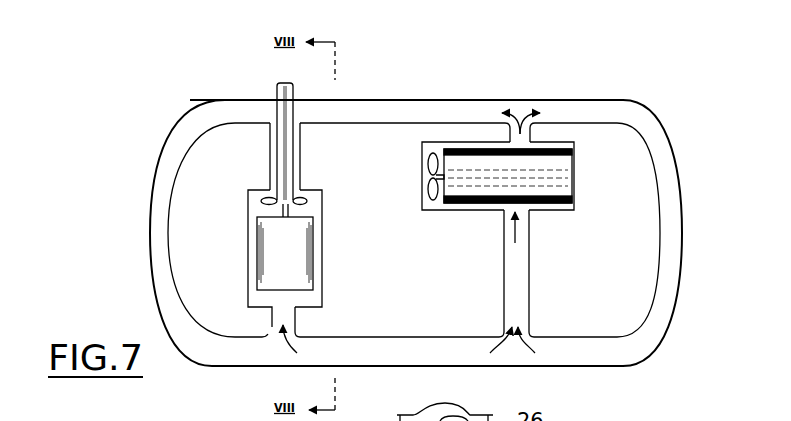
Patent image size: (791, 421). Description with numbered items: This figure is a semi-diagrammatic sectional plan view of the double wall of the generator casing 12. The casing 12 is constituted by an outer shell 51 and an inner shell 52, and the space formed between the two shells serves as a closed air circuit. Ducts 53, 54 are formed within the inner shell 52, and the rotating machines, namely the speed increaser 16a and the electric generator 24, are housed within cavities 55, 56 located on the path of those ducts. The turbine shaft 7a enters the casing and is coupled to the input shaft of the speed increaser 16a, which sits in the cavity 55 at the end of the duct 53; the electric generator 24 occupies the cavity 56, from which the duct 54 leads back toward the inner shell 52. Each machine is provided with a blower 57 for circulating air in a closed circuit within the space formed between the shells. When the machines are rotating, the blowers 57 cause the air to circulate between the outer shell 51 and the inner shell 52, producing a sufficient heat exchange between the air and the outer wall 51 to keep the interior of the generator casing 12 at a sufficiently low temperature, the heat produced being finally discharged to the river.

The turbine shaft 7a is at (291, 85).
The generator casing 12 is at (181, 109).
The speed increaser 16a is at (303, 272).
The electric generator 24 is at (563, 178).
The outer shell 51 is at (670, 315).
The inner shell 52 is at (630, 328).
The duct 53 is at (302, 150).
The duct 54 is at (522, 274).
The cavity 55 is at (318, 212).
The cavity 56 is at (478, 212).
The blower 57 is at (265, 198).